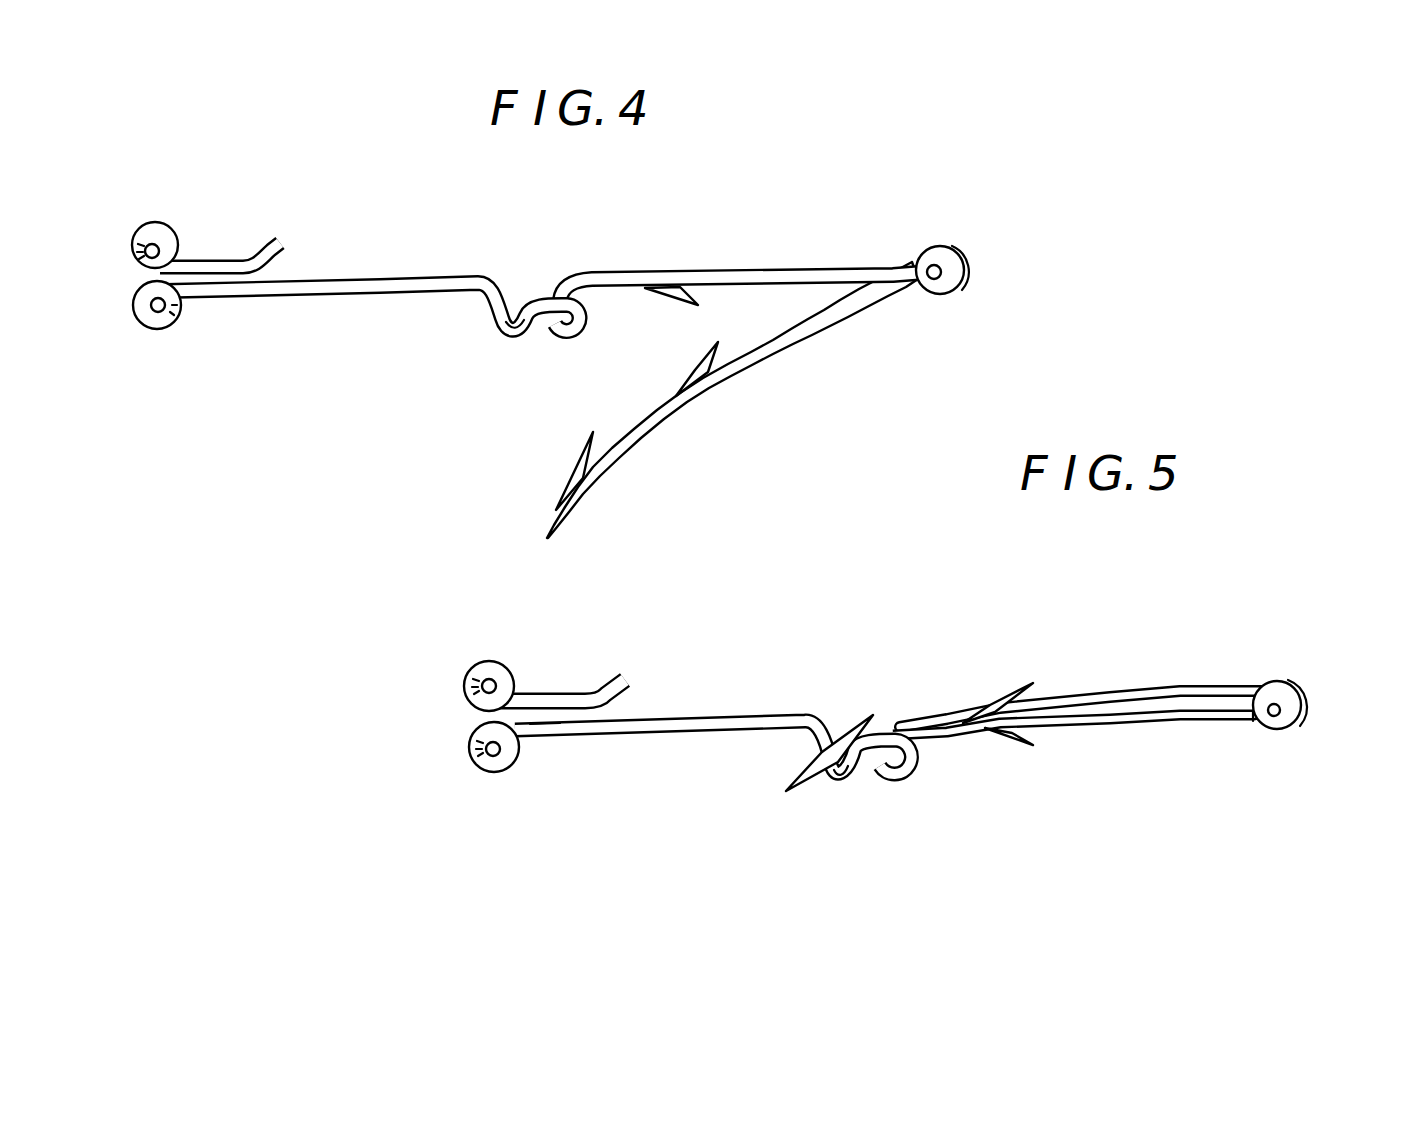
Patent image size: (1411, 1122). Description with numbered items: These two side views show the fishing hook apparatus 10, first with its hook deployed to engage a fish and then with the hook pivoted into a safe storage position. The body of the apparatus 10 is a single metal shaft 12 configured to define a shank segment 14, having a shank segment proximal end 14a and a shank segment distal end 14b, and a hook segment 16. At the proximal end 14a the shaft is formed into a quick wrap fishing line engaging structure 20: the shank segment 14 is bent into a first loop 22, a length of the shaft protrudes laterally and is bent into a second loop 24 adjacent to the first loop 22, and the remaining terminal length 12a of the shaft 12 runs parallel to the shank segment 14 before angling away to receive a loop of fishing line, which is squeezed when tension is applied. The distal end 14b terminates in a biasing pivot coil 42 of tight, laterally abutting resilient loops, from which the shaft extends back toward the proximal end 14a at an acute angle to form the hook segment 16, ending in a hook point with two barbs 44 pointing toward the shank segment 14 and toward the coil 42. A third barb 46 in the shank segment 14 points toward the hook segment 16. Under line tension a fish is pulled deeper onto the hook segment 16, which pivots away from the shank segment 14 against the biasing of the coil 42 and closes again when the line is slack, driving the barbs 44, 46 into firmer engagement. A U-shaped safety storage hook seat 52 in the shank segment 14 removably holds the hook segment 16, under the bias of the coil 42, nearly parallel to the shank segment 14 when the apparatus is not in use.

In FIG. 4, the fishing hook apparatus 10 is at (1065, 166).
In FIG. 5, the fishing hook apparatus 10 is at (1310, 588).
In FIG. 4, the metal shaft 12 is at (302, 288).
In FIG. 5, the metal shaft 12 is at (712, 740).
In FIG. 4, the terminal length of the shaft 12a is at (243, 247).
In FIG. 5, the terminal length of the shaft 12a is at (574, 692).
In FIG. 4, the shank segment 14 is at (455, 276).
In FIG. 5, the shank segment 14 is at (726, 716).
In FIG. 5, the shank segment proximal end 14a is at (543, 738).
In FIG. 5, the shank segment distal end 14b is at (1253, 724).
In FIG. 4, the hook segment 16 is at (770, 344).
In FIG. 5, the hook segment 16 is at (1112, 690).
In FIG. 4, the quick wrap fishing line engaging structure 20 is at (166, 203).
In FIG. 5, the quick wrap fishing line engaging structure 20 is at (466, 793).
In FIG. 4, the first loop 22 is at (142, 325).
In FIG. 5, the first loop 22 is at (473, 760).
In FIG. 4, the second loop 24 is at (172, 228).
In FIG. 5, the second loop 24 is at (478, 673).
In FIG. 4, the biasing pivot coil 42 is at (970, 264).
In FIG. 5, the biasing pivot coil 42 is at (1302, 694).
In FIG. 4, the barbs 44 is at (578, 456).
In FIG. 5, the barbs 44 is at (856, 714).
In FIG. 4, the third barb 46 is at (668, 301).
In FIG. 5, the third barb 46 is at (1029, 752).
In FIG. 4, the safety storage hook seat 52 is at (497, 347).
In FIG. 5, the safety storage hook seat 52 is at (830, 814).